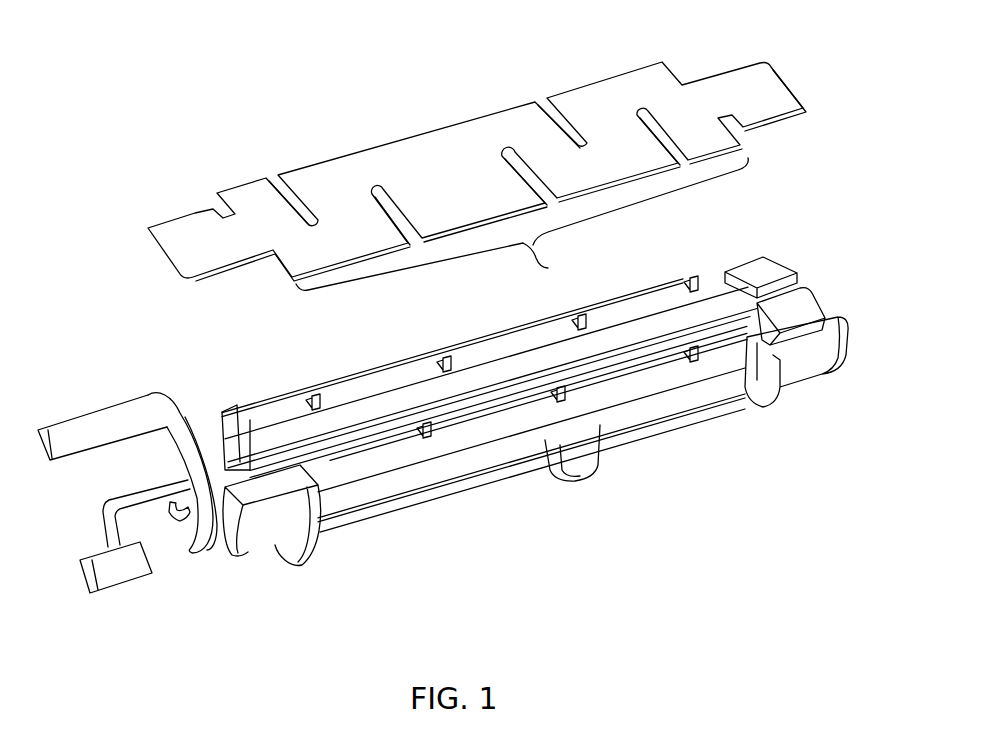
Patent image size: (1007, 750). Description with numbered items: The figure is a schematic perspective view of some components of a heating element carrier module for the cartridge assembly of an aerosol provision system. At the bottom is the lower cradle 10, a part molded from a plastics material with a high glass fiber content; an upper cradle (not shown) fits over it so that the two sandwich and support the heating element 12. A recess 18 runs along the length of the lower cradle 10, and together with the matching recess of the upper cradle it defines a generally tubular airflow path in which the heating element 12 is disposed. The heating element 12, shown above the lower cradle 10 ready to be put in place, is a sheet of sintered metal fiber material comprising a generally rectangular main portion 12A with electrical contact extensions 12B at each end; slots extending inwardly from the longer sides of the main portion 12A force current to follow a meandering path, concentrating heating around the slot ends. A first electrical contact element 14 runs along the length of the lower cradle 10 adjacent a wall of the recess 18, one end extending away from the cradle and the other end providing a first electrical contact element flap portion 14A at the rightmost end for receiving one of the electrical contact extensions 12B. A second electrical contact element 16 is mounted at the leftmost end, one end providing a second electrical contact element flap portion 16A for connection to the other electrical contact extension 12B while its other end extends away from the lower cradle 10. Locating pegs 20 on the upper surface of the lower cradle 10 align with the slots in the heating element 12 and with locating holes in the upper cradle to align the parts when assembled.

The lower cradle 10 is at (400, 488).
The heating element 12 is at (597, 105).
The main portion 12A is at (522, 229).
The electrical contact extensions 12B is at (765, 85).
The first electrical contact element 14 is at (120, 420).
The first electrical contact element flap portion 14A is at (803, 298).
The second electrical contact element 16 is at (130, 562).
The second electrical contact element flap portion 16A is at (218, 408).
The recess 18 is at (497, 375).
The locating pegs 20 is at (312, 395).